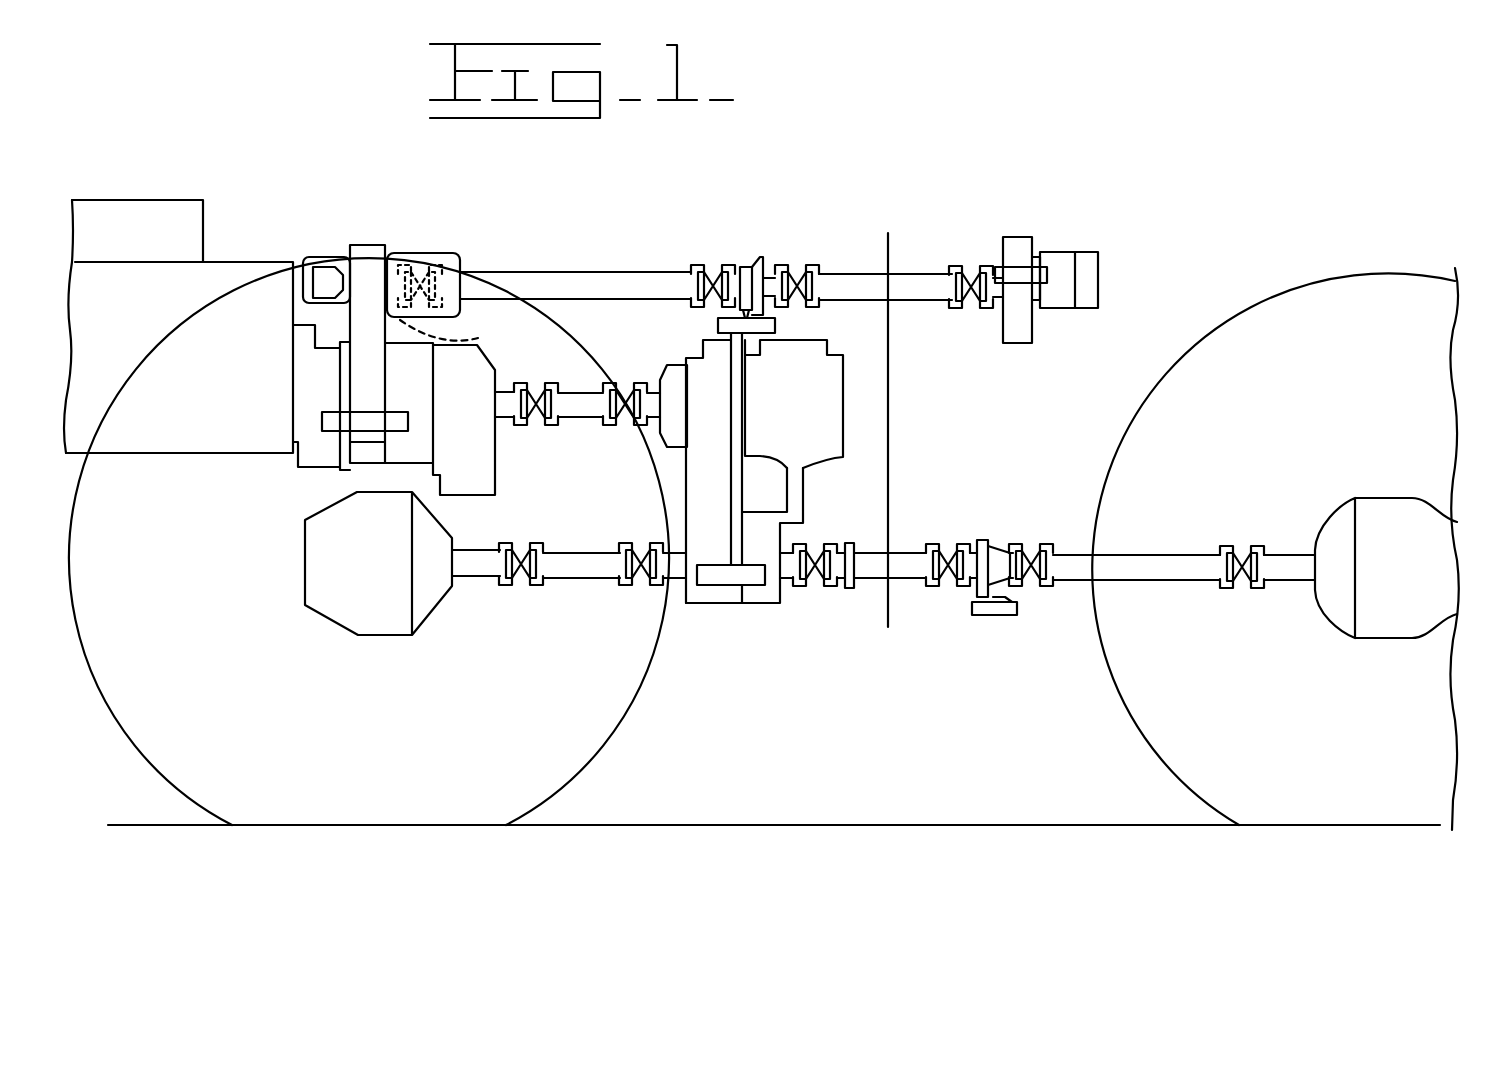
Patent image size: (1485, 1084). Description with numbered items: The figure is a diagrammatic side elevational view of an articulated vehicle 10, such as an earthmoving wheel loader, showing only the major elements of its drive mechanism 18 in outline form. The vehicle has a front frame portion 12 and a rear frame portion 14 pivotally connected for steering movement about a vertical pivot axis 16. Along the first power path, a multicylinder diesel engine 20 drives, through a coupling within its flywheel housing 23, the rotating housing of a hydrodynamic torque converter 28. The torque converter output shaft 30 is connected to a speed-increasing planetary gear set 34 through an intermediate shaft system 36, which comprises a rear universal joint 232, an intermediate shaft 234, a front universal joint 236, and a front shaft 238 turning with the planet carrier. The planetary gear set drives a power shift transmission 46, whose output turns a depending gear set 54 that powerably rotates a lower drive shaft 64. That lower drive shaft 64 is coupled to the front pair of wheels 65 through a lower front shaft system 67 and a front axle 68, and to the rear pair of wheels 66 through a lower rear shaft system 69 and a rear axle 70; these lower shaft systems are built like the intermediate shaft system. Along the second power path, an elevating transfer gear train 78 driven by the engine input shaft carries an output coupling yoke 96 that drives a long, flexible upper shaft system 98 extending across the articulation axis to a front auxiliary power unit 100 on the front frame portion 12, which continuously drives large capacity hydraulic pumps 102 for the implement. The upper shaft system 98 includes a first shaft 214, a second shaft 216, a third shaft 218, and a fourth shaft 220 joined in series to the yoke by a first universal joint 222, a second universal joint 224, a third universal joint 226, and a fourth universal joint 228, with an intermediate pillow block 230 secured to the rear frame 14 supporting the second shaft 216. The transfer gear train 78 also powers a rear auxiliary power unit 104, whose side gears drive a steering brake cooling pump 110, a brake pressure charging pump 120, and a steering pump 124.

The articulated vehicle 10 is at (1134, 161).
The front frame portion 12 is at (1025, 285).
The rear frame portion 14 is at (337, 428).
The vertical pivot axis 16 is at (890, 236).
The drive mechanism 18 is at (178, 356).
The multicylinder diesel engine 20 is at (122, 331).
The flywheel housing 23 is at (310, 380).
The hydrodynamic torque converter 28 is at (449, 432).
The output shaft 30 is at (508, 406).
The speed-increasing planetary gear set 34 is at (674, 390).
The intermediate shaft system 36 is at (598, 401).
The power shift transmission 46 is at (773, 410).
The depending gear set 54 is at (726, 447).
The lower drive shaft 64 is at (788, 570).
The front pair of wheels 65 is at (1105, 660).
The rear pair of wheels 66 is at (645, 690).
The lower front shaft system 67 is at (902, 546).
The front axle 68 is at (1395, 580).
The lower rear shaft system 69 is at (600, 550).
The rear axle 70 is at (371, 574).
The elevating transfer gear train 78 is at (368, 240).
The output coupling yoke 96 is at (456, 337).
The upper shaft system 98 is at (731, 271).
The front auxiliary power unit 100 is at (1021, 235).
The hydraulic pumps 102 is at (1085, 252).
The rear auxiliary power unit 104 is at (453, 267).
The steering brake cooling pump 110 is at (287, 270).
The brake pressure charging pump 120 is at (328, 283).
The steering pump 124 is at (452, 254).
The first shaft 214 is at (550, 272).
The second shaft 216 is at (726, 256).
The third shaft 218 is at (903, 279).
The fourth shaft 220 is at (997, 299).
The first universal joint 222 is at (428, 292).
The second universal joint 224 is at (712, 259).
The third universal joint 226 is at (801, 256).
The fourth universal joint 228 is at (970, 262).
The intermediate pillow block 230 is at (746, 265).
The rear universal joint 232 is at (540, 380).
The intermediate shaft 234 is at (570, 407).
The front universal joint 236 is at (627, 380).
The front shaft 238 is at (653, 421).